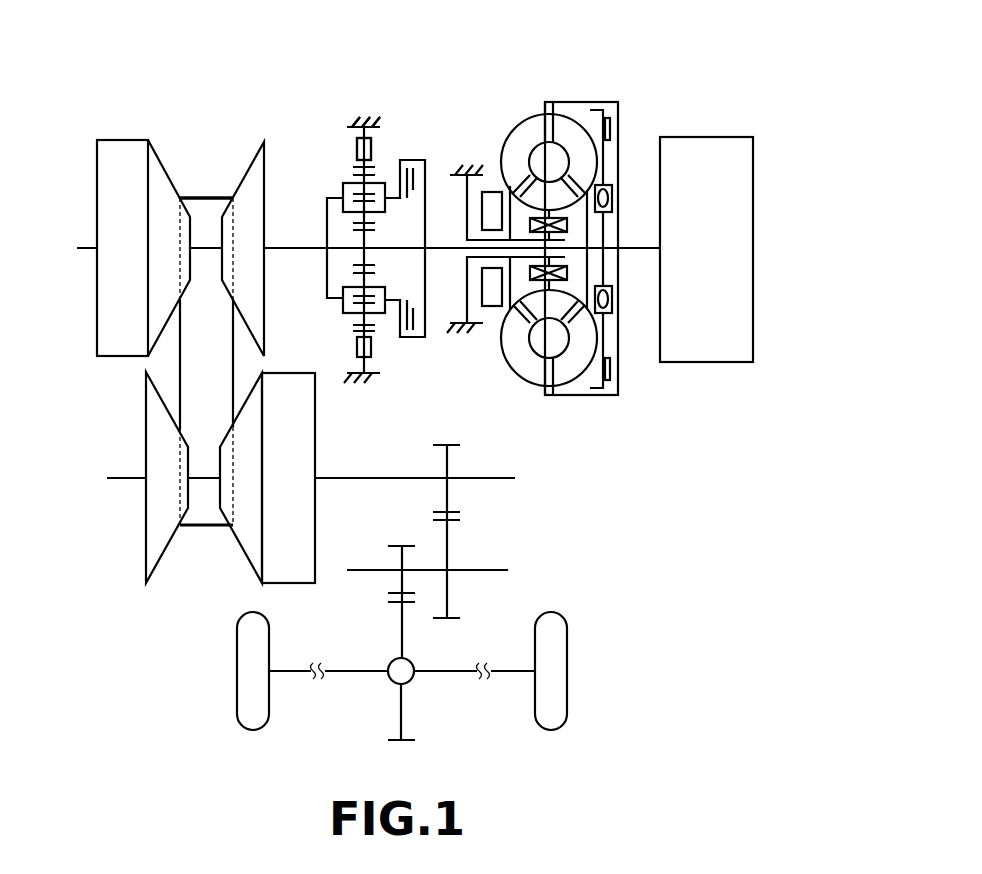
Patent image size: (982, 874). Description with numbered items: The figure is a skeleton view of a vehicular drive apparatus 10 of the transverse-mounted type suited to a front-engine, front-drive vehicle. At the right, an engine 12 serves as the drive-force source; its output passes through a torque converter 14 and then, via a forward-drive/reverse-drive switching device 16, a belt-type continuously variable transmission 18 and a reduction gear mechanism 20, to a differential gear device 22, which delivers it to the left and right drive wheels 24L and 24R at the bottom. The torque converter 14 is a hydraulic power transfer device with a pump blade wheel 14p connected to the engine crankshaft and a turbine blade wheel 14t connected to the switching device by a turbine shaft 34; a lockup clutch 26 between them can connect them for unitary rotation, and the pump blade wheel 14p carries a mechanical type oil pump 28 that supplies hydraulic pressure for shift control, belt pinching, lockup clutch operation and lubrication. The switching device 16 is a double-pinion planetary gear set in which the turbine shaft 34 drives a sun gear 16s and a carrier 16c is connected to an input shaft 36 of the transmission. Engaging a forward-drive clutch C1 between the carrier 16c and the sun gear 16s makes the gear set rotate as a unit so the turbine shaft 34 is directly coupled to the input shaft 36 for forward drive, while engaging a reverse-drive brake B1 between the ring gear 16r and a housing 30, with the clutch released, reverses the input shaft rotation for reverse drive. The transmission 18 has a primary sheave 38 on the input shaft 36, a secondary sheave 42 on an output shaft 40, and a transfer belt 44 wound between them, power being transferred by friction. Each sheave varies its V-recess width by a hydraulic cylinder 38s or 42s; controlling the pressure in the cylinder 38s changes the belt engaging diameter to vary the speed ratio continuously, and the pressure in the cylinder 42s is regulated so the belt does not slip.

The vehicular drive apparatus 10 is at (716, 72).
The engine 12 is at (742, 203).
The torque converter 14 is at (552, 236).
The pump blade wheel 14p is at (518, 363).
The turbine blade wheel 14t is at (565, 350).
The forward-drive/reverse-drive switching device 16 is at (345, 200).
The carrier 16c is at (337, 188).
The ring gear 16r is at (378, 165).
The sun gear 16s is at (355, 261).
The belt-type continuously variable transmission 18 is at (172, 606).
The reduction gear mechanism 20 is at (522, 530).
The differential gear device 22 is at (393, 675).
The left drive wheel 24L is at (243, 695).
The right drive wheel 24R is at (560, 687).
The lockup clutch 26 is at (607, 125).
The mechanical type oil pump 28 is at (492, 202).
The housing 30 is at (362, 118).
The turbine shaft 34 is at (437, 252).
The input shaft 36 is at (288, 248).
The primary sheave 38 is at (155, 222).
The hydraulic cylinder 38s is at (122, 168).
The output shaft 40 is at (380, 480).
The secondary sheave 42 is at (219, 487).
The hydraulic cylinder 42s is at (310, 458).
The transfer belt 44 is at (207, 197).
The reverse-drive brake B1 is at (356, 150).
The forward-drive clutch C1 is at (402, 340).